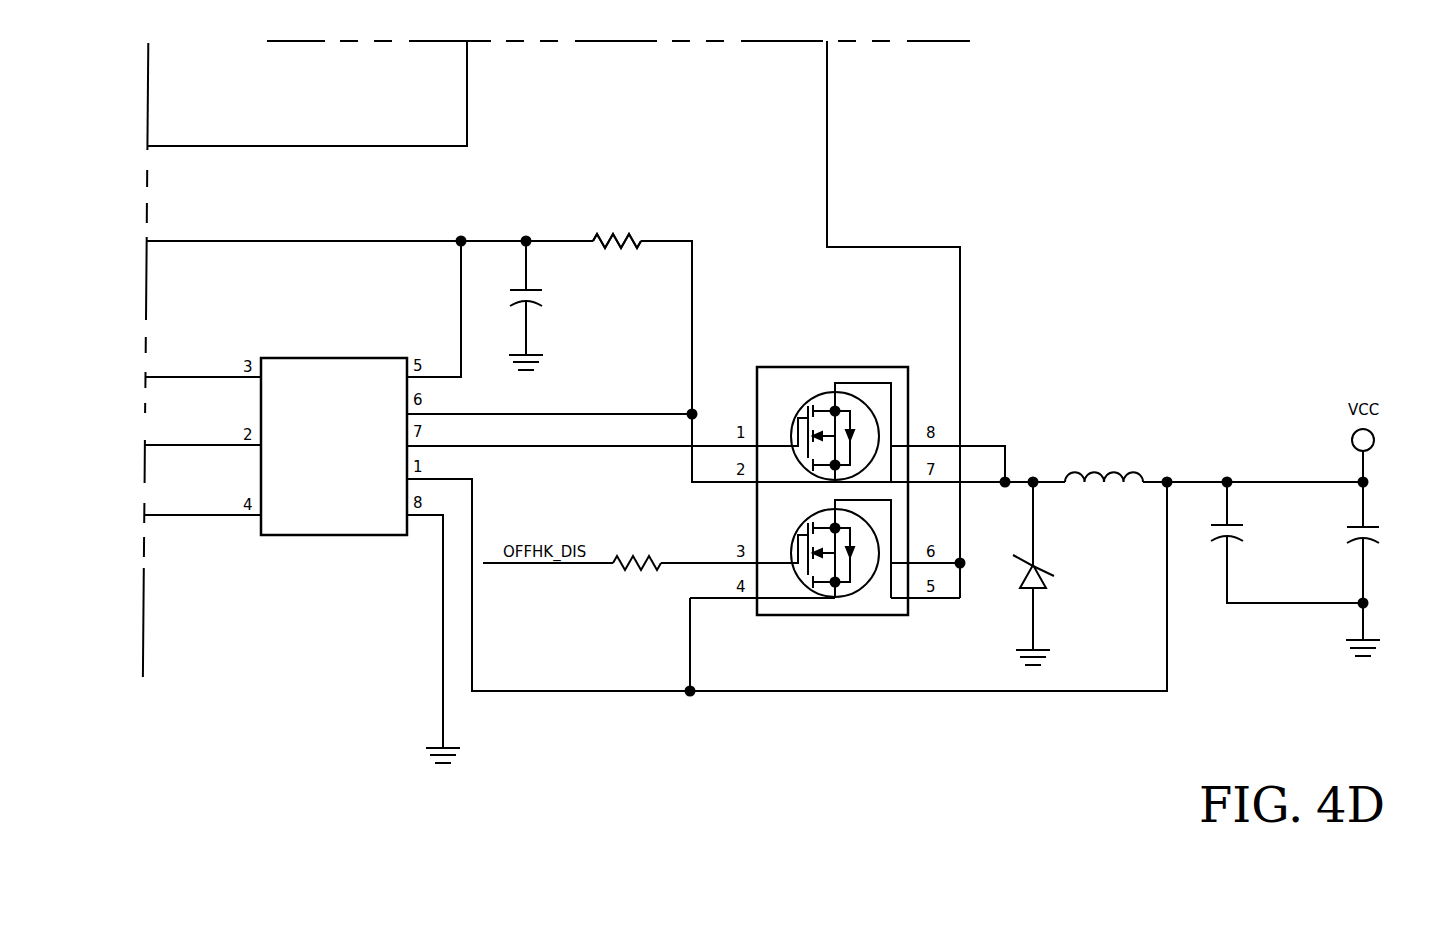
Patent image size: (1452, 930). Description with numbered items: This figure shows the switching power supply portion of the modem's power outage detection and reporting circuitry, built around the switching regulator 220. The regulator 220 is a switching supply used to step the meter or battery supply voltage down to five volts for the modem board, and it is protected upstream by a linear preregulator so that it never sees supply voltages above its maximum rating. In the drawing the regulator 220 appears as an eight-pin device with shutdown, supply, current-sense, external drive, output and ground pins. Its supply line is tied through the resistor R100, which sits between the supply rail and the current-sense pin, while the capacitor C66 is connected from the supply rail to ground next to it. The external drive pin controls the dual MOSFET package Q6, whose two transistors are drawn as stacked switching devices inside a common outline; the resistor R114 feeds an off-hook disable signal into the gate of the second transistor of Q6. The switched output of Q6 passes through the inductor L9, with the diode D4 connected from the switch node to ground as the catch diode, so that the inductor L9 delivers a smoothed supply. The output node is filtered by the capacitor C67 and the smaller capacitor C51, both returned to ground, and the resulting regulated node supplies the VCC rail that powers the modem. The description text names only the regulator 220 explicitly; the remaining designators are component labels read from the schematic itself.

The switching regulator 220 is at (334, 462).
The current sense resistor R100 is at (617, 244).
The supply bypass capacitor C66 is at (554, 305).
The off-hook disable resistor R114 is at (637, 567).
The dual MOSFET switch Q6 is at (832, 479).
The inductor L9 is at (1104, 482).
The Schottky diode D4 is at (1071, 573).
The output filter capacitor C67 is at (1287, 542).
The output bypass capacitor C51 is at (1385, 569).